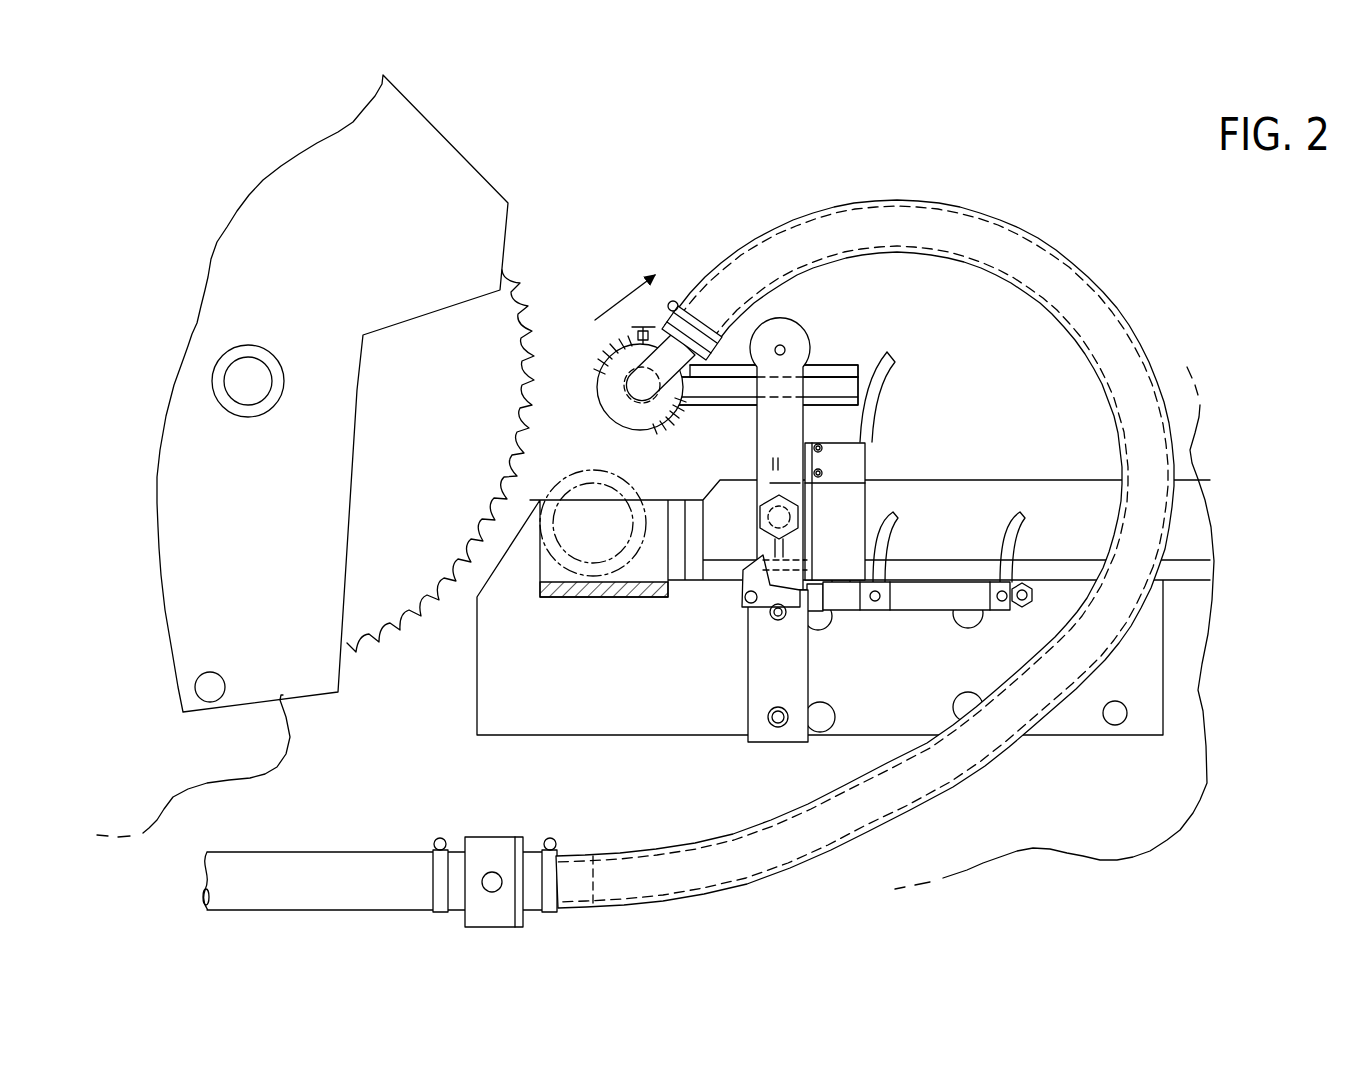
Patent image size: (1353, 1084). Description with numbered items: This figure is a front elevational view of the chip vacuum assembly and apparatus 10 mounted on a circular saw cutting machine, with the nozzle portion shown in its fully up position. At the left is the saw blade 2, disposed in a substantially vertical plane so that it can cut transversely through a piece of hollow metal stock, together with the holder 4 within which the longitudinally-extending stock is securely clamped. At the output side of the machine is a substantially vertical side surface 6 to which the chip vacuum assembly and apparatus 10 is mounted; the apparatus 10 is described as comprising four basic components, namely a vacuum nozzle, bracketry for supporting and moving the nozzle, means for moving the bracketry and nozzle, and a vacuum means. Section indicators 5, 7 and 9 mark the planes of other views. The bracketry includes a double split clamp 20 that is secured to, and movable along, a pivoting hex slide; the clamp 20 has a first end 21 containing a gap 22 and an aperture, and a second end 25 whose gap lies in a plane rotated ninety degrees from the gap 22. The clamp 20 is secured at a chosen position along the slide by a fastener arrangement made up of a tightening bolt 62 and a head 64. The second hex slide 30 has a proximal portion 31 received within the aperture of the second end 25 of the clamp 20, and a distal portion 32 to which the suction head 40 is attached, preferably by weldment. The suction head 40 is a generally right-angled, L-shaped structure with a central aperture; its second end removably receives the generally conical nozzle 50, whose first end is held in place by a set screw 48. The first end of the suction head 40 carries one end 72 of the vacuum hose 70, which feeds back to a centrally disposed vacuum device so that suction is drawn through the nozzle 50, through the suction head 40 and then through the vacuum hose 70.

The blade 2 is at (412, 352).
The holder 4 is at (497, 574).
The section line 5- 5 is at (595, 163).
The side surface 6 is at (996, 493).
The section line 7- 7 is at (695, 517).
The section line 9- 9 is at (723, 433).
The chip vacuum assembly and apparatus 10 is at (741, 187).
The double split clamp 20 is at (793, 433).
The first end 21 is at (763, 557).
The gap 22 is at (770, 608).
The second end 25 is at (797, 348).
The second hex slide 30 is at (743, 364).
The proximal portion 31 is at (842, 370).
The distal portion 32 is at (740, 407).
The suction head 40 is at (643, 387).
The set screw 48 is at (641, 330).
The nozzle 50 is at (600, 398).
The tightening bolt 62 is at (807, 550).
The head 64 is at (818, 630).
The vacuum hose 70 is at (1030, 248).
The end of vacuum hose 72 is at (706, 300).